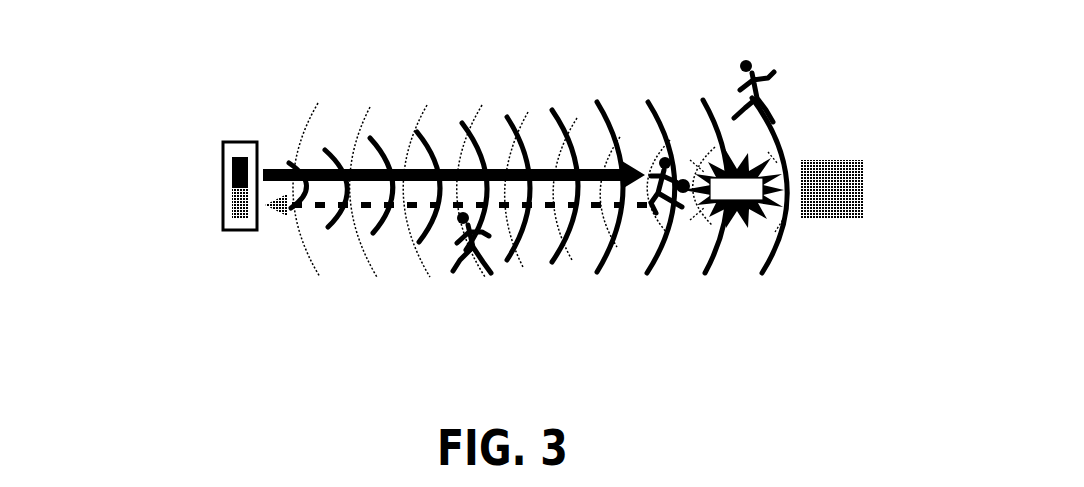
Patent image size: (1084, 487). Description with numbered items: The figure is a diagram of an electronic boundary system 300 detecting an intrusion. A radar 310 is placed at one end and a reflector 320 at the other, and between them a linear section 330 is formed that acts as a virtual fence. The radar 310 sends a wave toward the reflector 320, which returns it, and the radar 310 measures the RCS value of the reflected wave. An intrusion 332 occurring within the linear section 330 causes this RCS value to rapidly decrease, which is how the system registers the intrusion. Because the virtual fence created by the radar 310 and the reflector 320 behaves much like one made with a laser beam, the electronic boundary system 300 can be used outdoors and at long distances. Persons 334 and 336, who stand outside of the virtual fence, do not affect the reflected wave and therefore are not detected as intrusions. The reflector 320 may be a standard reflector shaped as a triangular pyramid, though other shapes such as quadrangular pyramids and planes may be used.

The electronic boundary system 300 is at (527, 186).
The radar 310 is at (262, 180).
The reflector 320 is at (880, 169).
The linear section 330 is at (525, 171).
The intrusion 332 is at (626, 231).
The person 334 is at (792, 70).
The person 336 is at (429, 269).